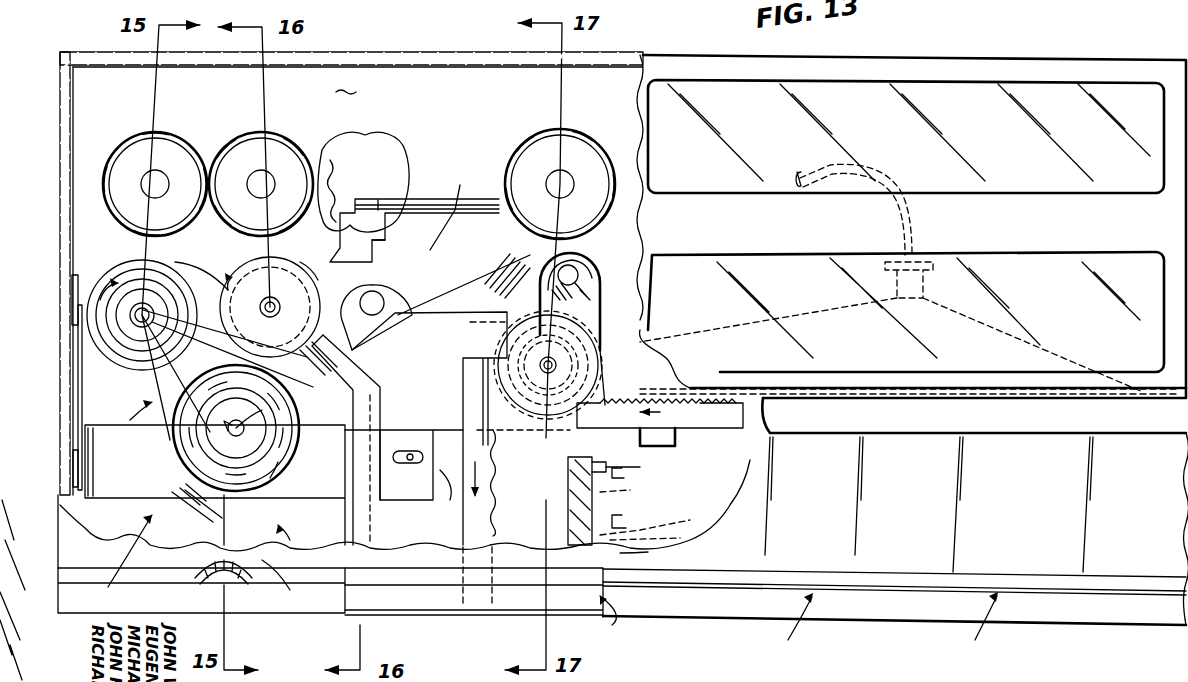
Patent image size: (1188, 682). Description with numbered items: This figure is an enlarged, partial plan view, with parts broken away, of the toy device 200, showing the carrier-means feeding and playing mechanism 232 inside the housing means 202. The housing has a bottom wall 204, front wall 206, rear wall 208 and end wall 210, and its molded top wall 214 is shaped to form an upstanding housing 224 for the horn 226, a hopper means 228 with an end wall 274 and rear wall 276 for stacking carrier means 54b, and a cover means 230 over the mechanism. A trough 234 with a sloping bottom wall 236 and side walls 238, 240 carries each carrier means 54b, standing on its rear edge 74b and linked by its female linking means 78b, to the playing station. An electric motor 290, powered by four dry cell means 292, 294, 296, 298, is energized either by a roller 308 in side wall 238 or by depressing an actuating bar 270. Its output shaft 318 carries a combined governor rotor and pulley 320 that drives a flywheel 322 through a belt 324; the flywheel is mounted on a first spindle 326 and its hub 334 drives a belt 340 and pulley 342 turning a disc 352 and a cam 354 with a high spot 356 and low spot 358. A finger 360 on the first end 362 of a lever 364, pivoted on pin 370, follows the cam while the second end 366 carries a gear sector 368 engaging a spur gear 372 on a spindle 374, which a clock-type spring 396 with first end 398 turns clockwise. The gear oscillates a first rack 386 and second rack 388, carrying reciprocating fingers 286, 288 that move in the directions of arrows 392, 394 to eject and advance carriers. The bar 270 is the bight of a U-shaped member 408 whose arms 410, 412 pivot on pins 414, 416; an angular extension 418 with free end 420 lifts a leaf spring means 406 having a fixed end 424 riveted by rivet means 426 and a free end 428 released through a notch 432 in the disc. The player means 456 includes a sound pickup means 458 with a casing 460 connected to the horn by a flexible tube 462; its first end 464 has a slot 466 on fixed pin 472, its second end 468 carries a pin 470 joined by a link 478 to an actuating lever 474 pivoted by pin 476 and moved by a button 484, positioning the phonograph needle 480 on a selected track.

The carrier means 54b is at (450, 198).
The rear edge 74b is at (651, 550).
The female linking means 78b is at (629, 494).
The toy device 200 is at (804, 626).
The housing means 202 is at (995, 626).
The bottom wall 204 is at (344, 82).
The front wall 206 is at (886, 630).
The rear wall 208 is at (388, 53).
The end wall 210 is at (60, 193).
The top wall 214 is at (1108, 96).
The upstanding housing 224 is at (1079, 412).
The horn 226 is at (1074, 356).
The hopper means 228 is at (487, 190).
The cover means 230 is at (118, 536).
The feeding and playing mechanism 232 is at (128, 470).
The trough 234 is at (1106, 548).
The sloping bottom wall 236 is at (1142, 490).
The side wall 238 is at (1010, 572).
The side wall 240 is at (977, 444).
The actuating bar 270 is at (438, 607).
The end wall 274 is at (386, 240).
The rear wall 276 is at (380, 200).
The reciprocating finger 286 is at (488, 370).
The reciprocating finger 288 is at (640, 467).
The electric motor 290 is at (118, 288).
The dry cell means 292 is at (133, 150).
The dry cell means 294 is at (242, 158).
The dry cell means 296 is at (375, 140).
The dry cell means 298 is at (578, 147).
The roller 308 is at (248, 582).
The output shaft 318 is at (76, 332).
The combined governor rotor and pulley 320 is at (200, 266).
The flywheel 322 is at (294, 462).
The belt 324 is at (178, 488).
The first spindle 326 is at (272, 480).
The hub 334 is at (130, 420).
The belt 340 is at (240, 290).
The pulley 342 is at (386, 300).
The disc 352 is at (258, 262).
The cam 354 is at (318, 262).
The high spot 356 is at (170, 370).
The low spot 358 is at (375, 317).
The finger 360 is at (340, 390).
The first end 362 is at (392, 380).
The lever 364 is at (478, 276).
The second end 366 is at (520, 268).
The gear sector 368 is at (612, 310).
The pivot pin 370 is at (398, 314).
The spur gear 372 is at (572, 360).
The spindle 374 is at (580, 360).
The first rack 386 is at (472, 356).
The second rack 388 is at (652, 497).
The arrow 392 is at (496, 490).
The arrow 394 is at (658, 412).
The clock-type spring 396 is at (608, 244).
The first end 398 is at (610, 256).
The leaf spring means 406 is at (360, 360).
The U-shaped member 408 is at (612, 625).
The arm 410 is at (628, 528).
The arm 412 is at (301, 544).
The pivot pin 414 is at (624, 478).
The pivot pin 416 is at (318, 500).
The angular extension 418 is at (385, 348).
The free end 420 is at (405, 332).
The fixed end 424 is at (418, 498).
The rivet means 426 is at (392, 430).
The free end 428 is at (340, 378).
The notch 432 is at (245, 412).
The player means 456 is at (201, 564).
The sound pickup means 458 is at (291, 584).
The casing 460 is at (412, 528).
The hollow, flexible tube 462 is at (900, 175).
The first end 464 is at (446, 528).
The slot 466 is at (457, 465).
The second end 468 is at (74, 505).
The pin 470 is at (75, 438).
The fixed pin 472 is at (410, 452).
The actuating lever 474 is at (72, 300).
The pin 476 is at (72, 265).
The link 478 is at (80, 355).
The phonograph needle 480 is at (210, 480).
The button 484 is at (72, 300).